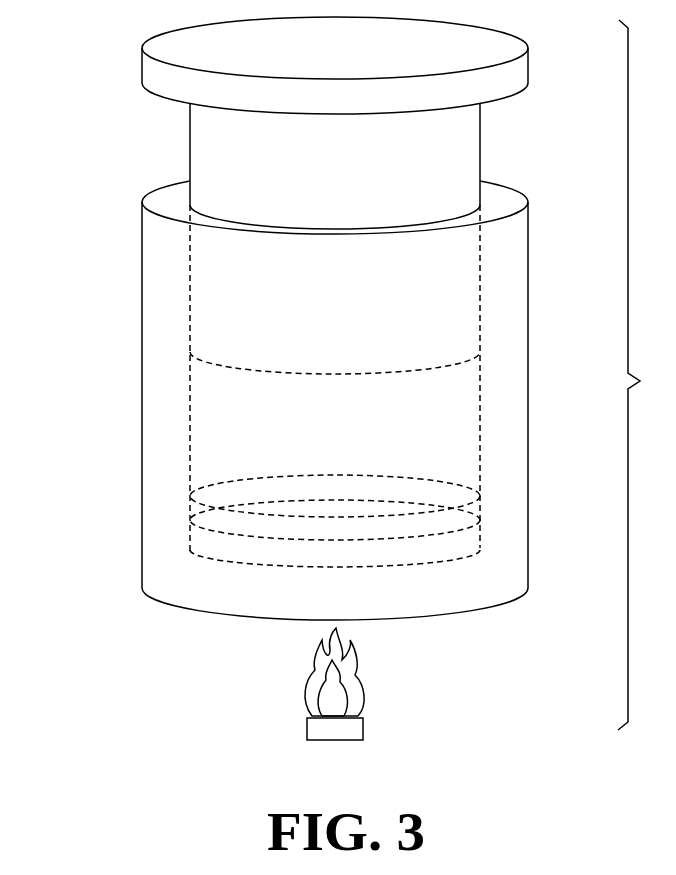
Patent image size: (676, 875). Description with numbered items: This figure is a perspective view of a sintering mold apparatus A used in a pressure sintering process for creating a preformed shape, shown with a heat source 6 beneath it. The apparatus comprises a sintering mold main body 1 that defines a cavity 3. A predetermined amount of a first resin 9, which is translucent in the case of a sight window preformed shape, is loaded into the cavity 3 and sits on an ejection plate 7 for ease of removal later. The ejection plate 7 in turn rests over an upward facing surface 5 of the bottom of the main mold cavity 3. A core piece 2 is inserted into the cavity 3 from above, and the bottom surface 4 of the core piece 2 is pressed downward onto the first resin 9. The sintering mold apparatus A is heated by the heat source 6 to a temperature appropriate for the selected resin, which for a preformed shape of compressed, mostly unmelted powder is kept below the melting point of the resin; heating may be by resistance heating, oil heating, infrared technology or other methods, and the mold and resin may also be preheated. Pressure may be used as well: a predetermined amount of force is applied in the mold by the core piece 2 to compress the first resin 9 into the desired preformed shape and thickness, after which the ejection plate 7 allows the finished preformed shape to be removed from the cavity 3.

The sintering mold main body 1 is at (140, 284).
The core piece 2 is at (528, 55).
The cavity 3 is at (427, 217).
The bottom surface 4 is at (440, 367).
The upward facing surface 5 is at (268, 570).
The heat source 6 is at (364, 725).
The ejection plate 7 is at (483, 522).
The first resin 9 is at (483, 500).
The sintering mold apparatus A is at (101, 80).